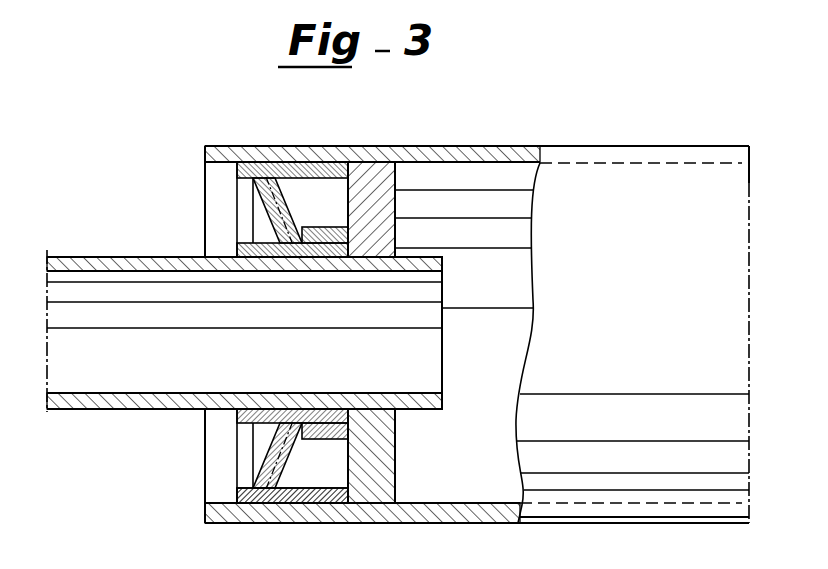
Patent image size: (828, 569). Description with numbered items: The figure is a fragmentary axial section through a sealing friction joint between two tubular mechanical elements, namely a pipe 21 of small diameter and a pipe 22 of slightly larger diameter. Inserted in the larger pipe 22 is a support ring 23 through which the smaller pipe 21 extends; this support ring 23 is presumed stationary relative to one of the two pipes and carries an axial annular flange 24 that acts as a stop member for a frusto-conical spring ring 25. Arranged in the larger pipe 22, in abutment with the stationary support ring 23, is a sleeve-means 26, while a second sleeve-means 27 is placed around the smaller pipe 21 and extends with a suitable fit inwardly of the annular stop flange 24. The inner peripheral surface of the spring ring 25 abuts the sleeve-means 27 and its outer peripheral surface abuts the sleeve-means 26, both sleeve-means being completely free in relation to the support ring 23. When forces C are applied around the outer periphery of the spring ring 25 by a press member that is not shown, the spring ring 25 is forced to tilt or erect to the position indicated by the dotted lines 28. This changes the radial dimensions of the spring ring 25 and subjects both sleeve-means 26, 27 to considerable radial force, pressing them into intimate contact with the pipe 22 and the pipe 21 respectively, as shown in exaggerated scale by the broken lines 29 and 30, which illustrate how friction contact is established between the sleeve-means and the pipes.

The pipe of small diameter 21 is at (82, 264).
The pipe of slightly larger diameter 22 is at (462, 157).
The support ring 23 is at (368, 173).
The axial annular flange 24 is at (323, 235).
The frusto-conical spring ring 25 is at (257, 198).
The sleeve-means 26 is at (257, 165).
The sleeve-means 27 is at (240, 252).
The dotted lines 28 is at (296, 217).
The broken lines 29 is at (293, 510).
The broken lines 30 is at (233, 409).
The forces C is at (238, 192).